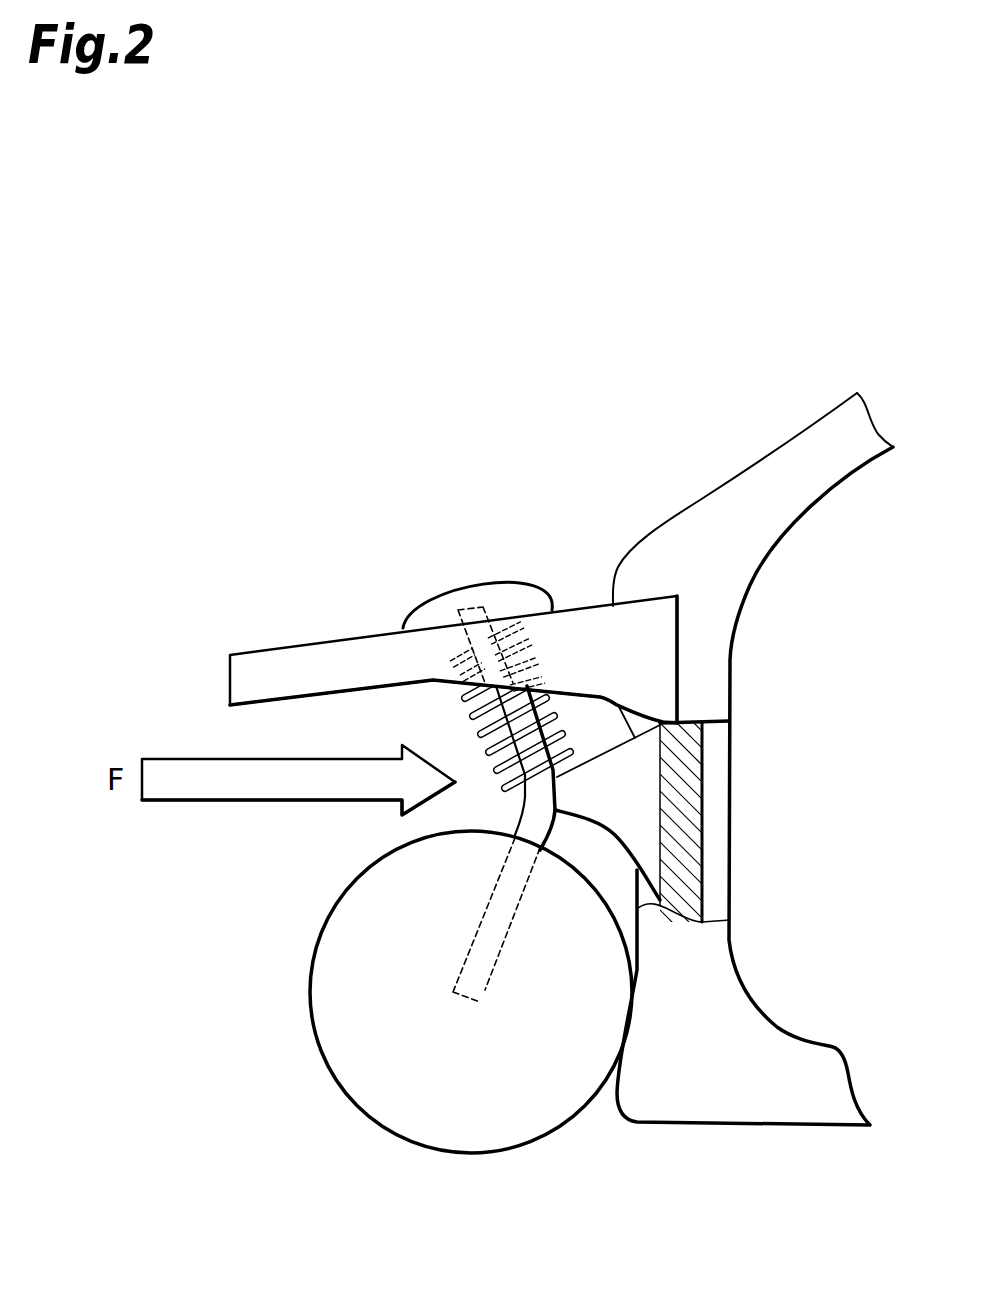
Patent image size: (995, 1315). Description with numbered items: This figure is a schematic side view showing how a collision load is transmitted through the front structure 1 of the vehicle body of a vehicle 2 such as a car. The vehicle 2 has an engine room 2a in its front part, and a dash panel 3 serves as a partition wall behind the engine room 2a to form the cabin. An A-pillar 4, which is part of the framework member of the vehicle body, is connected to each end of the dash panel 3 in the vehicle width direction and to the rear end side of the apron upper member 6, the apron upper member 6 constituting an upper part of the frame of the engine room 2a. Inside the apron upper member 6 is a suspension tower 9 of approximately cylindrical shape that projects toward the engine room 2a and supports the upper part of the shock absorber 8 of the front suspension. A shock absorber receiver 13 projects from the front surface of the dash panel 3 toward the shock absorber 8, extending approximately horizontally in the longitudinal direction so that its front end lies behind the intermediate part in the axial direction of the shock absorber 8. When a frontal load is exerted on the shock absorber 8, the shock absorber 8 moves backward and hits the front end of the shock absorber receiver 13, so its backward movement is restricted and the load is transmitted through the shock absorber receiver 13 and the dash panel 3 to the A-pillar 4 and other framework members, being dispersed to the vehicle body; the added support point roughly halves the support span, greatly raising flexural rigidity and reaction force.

The front structure of the vehicle body 1 is at (252, 425).
The vehicle 2 is at (137, 235).
The engine room 2a is at (463, 499).
The dash panel 3 is at (687, 807).
The A-pillar 4 is at (717, 643).
The apron upper member 6 is at (265, 663).
The shock absorber 8 is at (487, 736).
The suspension tower 9 is at (422, 612).
The shock absorber receiver 13 is at (588, 787).